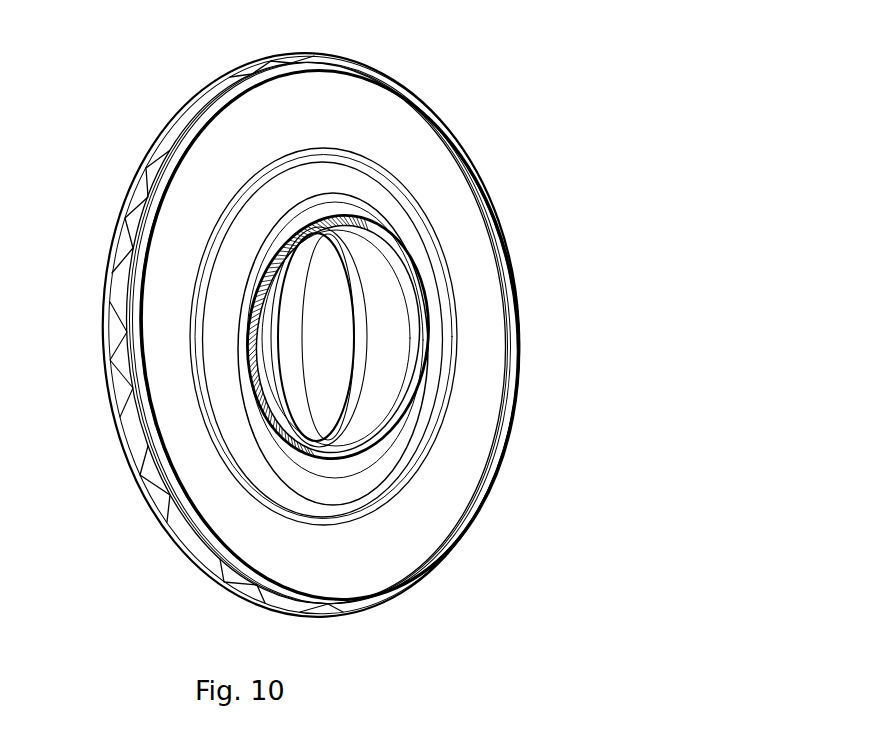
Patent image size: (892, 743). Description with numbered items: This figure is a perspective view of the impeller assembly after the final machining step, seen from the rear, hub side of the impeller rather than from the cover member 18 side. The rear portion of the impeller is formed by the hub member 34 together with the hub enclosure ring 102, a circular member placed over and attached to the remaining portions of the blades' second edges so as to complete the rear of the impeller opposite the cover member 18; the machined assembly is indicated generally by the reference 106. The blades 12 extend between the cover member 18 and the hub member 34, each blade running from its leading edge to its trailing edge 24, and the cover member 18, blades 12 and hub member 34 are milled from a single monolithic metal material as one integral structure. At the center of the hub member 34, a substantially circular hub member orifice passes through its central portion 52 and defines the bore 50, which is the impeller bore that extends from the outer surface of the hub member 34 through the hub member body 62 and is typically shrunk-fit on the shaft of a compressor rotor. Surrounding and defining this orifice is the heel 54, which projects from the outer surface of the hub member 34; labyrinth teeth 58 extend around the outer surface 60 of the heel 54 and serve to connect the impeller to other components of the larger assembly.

The blade 12 is at (130, 455).
The cover member 18 is at (192, 568).
The trailing edge 24 is at (144, 193).
The hub member 34 is at (310, 197).
The bore 50 is at (380, 340).
The central portion 52 is at (318, 463).
The heel 54 is at (395, 426).
The labyrinth teeth 58 is at (257, 363).
The outer surface 60 is at (343, 215).
The hub member body 62 is at (398, 270).
The hub enclosure ring 102 is at (476, 280).
The impeller assembly 106 is at (520, 165).